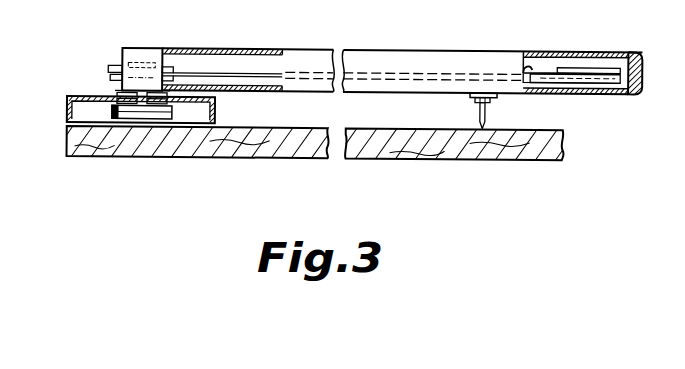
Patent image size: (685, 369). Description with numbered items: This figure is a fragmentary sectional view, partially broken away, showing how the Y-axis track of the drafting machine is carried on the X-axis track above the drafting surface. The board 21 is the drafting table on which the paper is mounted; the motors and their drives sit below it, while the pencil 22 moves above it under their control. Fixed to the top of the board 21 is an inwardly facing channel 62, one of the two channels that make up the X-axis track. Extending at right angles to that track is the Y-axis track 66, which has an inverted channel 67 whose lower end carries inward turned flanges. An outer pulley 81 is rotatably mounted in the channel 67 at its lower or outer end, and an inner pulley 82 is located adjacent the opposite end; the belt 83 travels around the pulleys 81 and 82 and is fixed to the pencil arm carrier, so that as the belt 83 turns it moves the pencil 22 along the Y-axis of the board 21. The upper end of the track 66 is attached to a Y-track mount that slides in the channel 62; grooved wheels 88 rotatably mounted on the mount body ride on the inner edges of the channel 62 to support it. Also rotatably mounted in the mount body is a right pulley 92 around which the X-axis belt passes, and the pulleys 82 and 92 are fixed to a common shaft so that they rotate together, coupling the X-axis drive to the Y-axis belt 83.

The board 21 is at (368, 158).
The pencil 22 is at (488, 105).
The channel 62 is at (78, 97).
The Y-axis track 66 is at (398, 50).
The inverted channel 67 is at (543, 51).
The outer pulley 81 is at (571, 70).
The inner pulley 82 is at (115, 64).
The belt 83 is at (533, 73).
The grooved wheels 88 is at (155, 104).
The right pulley 92 is at (110, 107).